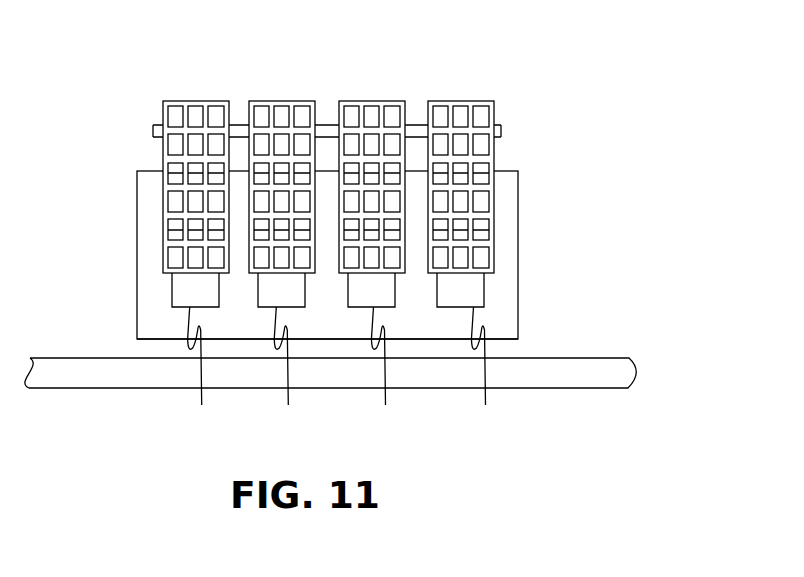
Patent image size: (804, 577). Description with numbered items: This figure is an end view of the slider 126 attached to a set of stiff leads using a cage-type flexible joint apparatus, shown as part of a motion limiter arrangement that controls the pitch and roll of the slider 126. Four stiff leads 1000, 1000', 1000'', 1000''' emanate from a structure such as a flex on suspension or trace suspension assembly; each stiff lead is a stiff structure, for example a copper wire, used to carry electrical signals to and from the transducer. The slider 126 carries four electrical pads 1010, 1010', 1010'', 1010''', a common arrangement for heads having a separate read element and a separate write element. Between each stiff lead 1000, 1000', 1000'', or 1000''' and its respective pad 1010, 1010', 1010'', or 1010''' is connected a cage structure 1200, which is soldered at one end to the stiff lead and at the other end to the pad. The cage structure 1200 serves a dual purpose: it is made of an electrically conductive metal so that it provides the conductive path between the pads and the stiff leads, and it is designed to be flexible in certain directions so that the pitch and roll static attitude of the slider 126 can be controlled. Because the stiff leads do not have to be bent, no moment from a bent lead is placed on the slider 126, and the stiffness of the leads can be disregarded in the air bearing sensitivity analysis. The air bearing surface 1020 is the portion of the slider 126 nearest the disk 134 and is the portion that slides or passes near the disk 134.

The stiff lead 1000 is at (195, 181).
The stiff lead 1000' is at (288, 181).
The stiff lead 1000'' is at (385, 181).
The stiff lead 1000''' is at (484, 181).
The electrical contact pad 1010 is at (196, 373).
The pad 1010' is at (284, 373).
The pad 1010'' is at (384, 373).
The pad 1010''' is at (486, 373).
The air bearing surface 1020 is at (153, 341).
The cage structure 1200 is at (478, 160).
The slider 126 is at (512, 305).
The disk 134 is at (608, 362).